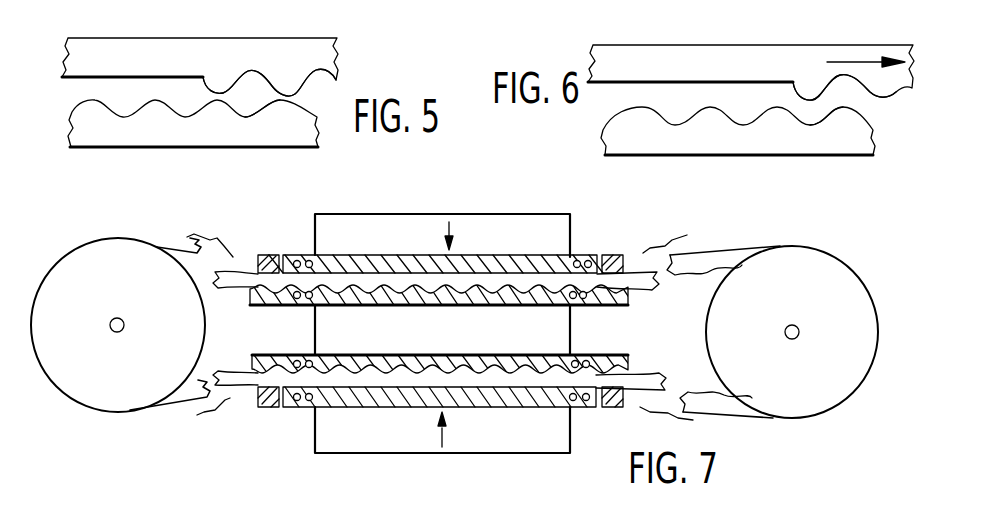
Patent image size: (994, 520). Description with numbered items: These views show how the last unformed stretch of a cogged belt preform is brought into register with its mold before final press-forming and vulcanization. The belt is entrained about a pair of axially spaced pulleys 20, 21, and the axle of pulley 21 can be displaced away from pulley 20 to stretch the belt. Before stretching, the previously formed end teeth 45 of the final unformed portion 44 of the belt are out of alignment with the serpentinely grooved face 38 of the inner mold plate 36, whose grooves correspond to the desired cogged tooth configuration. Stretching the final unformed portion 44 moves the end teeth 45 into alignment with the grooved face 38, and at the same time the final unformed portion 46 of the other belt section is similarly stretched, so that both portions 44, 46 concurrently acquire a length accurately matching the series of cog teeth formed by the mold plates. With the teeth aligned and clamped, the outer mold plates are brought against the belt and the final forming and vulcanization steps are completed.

In FIG. 7, the pulley 20 is at (133, 392).
In FIG. 7, the pulley 21 is at (833, 389).
In FIG. 5, the first inner mold plate 36 is at (162, 133).
In FIG. 6, the first inner mold plate 36 is at (758, 140).
In FIG. 5, the serpentinely grooved face 38 is at (259, 108).
In FIG. 6, the serpentinely grooved face 38 is at (823, 118).
In FIG. 5, the final unformed portion of the belt 44 is at (143, 55).
In FIG. 6, the final unformed portion of the belt 44 is at (653, 52).
In FIG. 7, the final unformed portion of the belt 44 is at (490, 280).
In FIG. 5, the end teeth 45 is at (228, 77).
In FIG. 6, the end teeth 45 is at (908, 118).
In FIG. 7, the final unformed portion of the belt portion 46 is at (531, 383).